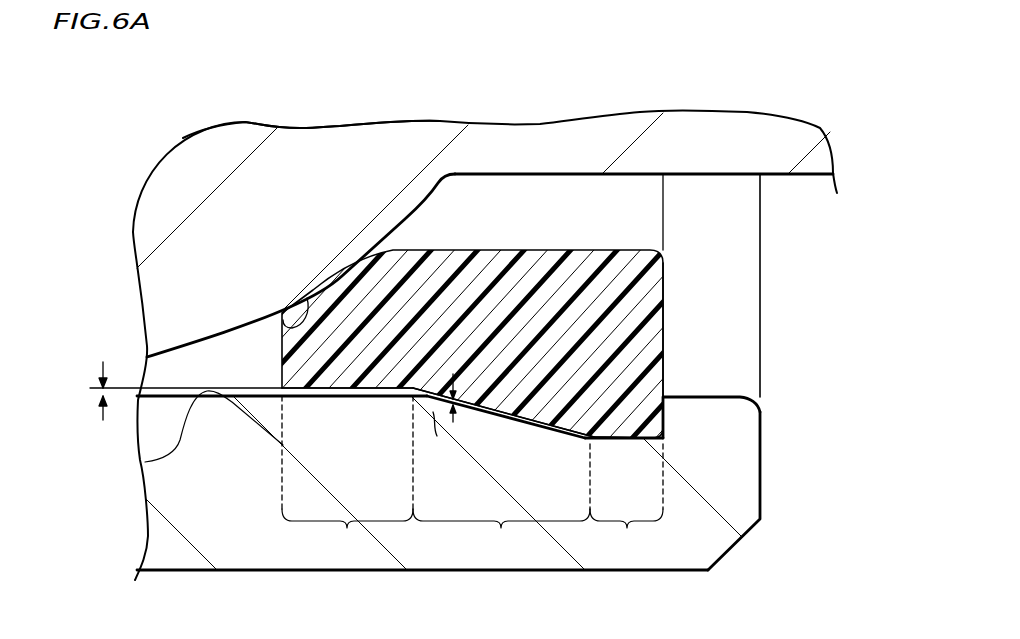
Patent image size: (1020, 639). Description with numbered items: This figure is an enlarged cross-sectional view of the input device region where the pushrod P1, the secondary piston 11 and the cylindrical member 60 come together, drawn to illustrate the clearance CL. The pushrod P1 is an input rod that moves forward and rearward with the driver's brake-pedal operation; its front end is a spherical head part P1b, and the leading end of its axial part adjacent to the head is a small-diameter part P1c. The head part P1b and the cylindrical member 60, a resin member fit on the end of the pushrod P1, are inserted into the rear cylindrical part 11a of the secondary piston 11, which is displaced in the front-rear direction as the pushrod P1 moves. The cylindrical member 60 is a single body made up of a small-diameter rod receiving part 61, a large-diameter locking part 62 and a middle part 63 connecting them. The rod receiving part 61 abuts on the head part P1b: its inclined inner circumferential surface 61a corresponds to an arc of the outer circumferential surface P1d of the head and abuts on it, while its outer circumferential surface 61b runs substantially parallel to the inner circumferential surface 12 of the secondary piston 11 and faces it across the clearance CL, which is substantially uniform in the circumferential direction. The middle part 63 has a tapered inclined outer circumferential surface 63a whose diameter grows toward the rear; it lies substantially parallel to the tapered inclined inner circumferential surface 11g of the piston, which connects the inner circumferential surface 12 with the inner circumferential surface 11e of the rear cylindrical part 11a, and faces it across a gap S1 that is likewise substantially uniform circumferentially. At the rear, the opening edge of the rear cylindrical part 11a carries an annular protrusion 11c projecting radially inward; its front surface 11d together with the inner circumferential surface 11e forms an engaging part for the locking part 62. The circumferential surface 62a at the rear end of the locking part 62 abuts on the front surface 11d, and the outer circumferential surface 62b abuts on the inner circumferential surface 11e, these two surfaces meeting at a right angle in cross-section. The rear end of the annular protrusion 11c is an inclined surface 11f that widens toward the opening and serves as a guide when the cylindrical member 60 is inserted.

The pushrod P1 is at (477, 328).
The head part P1b is at (285, 168).
The small-diameter part P1c is at (560, 146).
The outer circumferential surface P1d is at (282, 330).
The cylindrical member 60 is at (515, 240).
The rod receiving part 61 is at (347, 478).
The inner circumferential surface 61a is at (307, 298).
The outer circumferential surface 61b is at (332, 397).
The locking part 62 is at (626, 502).
The circumferential surface 62a is at (668, 406).
The outer circumferential surface 62b is at (647, 439).
The middle part 63 is at (501, 502).
The inclined outer circumferential surface 63a is at (469, 405).
The secondary piston 11 is at (459, 485).
The rear cylindrical part 11a is at (448, 548).
The annular protrusion 11c is at (728, 455).
The front surface 11d is at (663, 391).
The inner circumferential surface 11e is at (590, 440).
The inclined surface 11f is at (730, 398).
The inclined inner circumferential surface 11g is at (526, 421).
The inner circumferential surface 12 is at (145, 462).
The gap S1 is at (458, 422).
The clearance CL is at (85, 391).